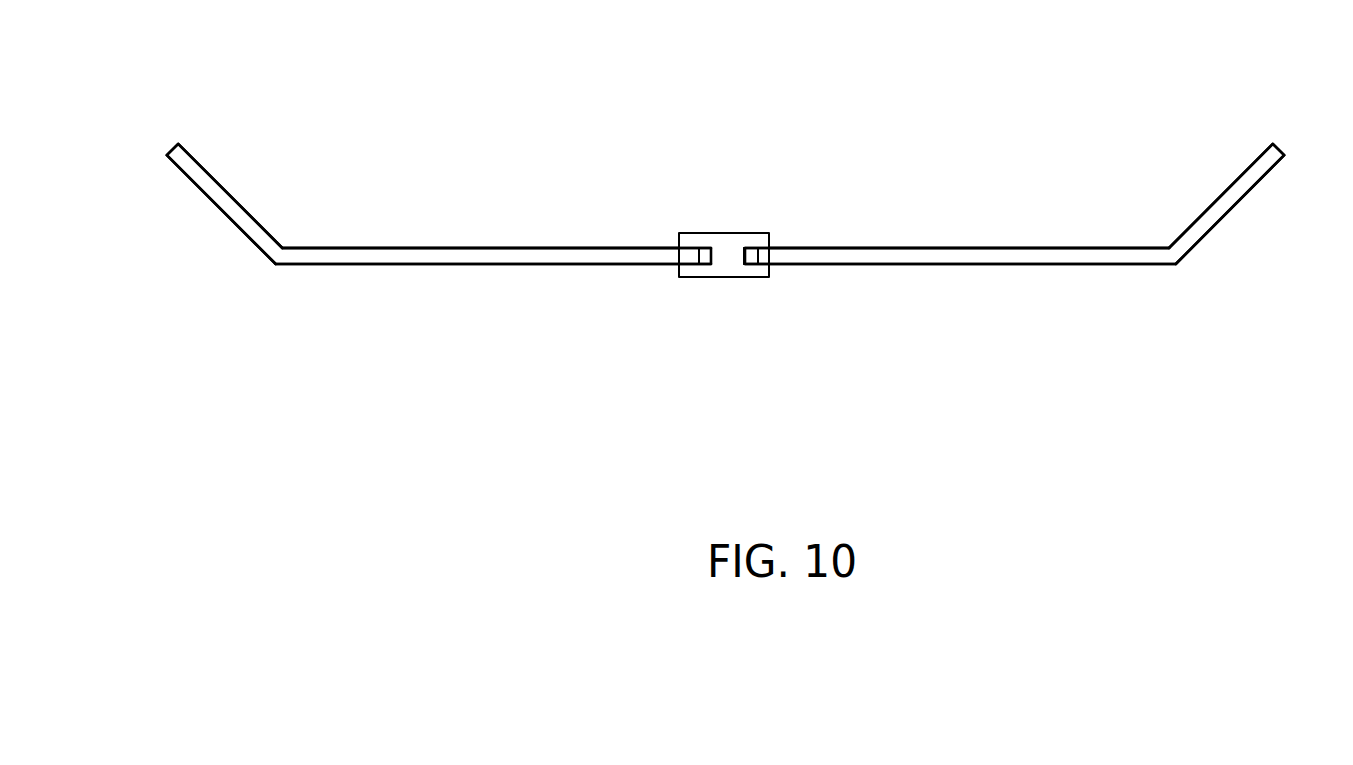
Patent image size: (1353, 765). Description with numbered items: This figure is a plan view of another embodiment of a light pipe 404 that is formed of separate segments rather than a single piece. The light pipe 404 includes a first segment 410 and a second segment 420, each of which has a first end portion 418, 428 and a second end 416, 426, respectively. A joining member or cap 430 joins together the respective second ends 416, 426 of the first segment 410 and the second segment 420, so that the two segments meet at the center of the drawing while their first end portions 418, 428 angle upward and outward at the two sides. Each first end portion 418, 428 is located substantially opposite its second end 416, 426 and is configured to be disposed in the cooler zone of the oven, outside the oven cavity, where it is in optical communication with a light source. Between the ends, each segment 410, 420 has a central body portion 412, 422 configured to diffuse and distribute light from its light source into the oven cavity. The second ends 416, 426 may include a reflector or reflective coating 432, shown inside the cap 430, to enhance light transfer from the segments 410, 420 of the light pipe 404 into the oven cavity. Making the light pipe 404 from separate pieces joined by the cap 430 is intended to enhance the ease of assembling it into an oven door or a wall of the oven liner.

The light pipe 404 is at (1133, 260).
The first segment 410 is at (410, 259).
The central body portion 412 is at (482, 248).
The second end 416 is at (707, 252).
The first end portion 418 is at (175, 170).
The second segment 420 is at (970, 267).
The central body portion 422 is at (967, 248).
The second end 426 is at (762, 233).
The first end portion 428 is at (1245, 168).
The joining member or cap 430 is at (718, 278).
The reflector or reflective coating 432 is at (703, 265).